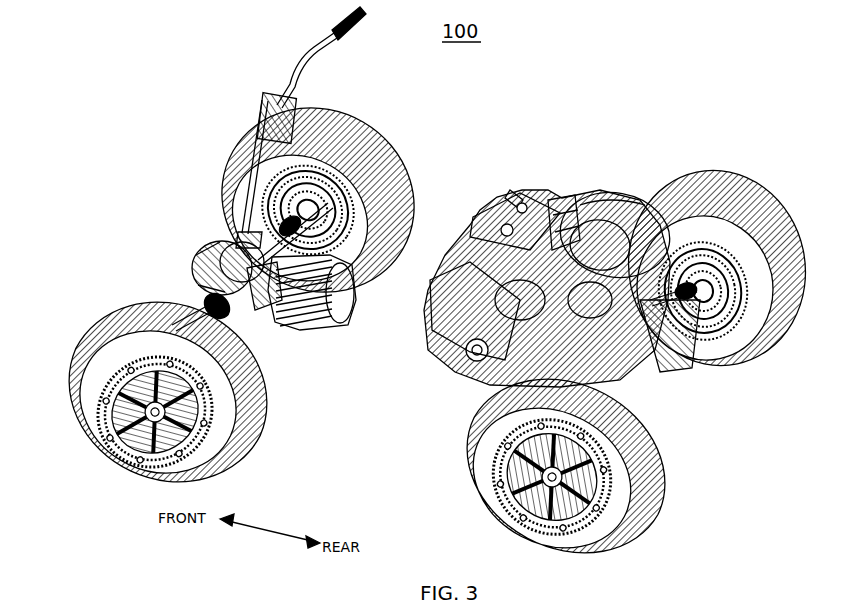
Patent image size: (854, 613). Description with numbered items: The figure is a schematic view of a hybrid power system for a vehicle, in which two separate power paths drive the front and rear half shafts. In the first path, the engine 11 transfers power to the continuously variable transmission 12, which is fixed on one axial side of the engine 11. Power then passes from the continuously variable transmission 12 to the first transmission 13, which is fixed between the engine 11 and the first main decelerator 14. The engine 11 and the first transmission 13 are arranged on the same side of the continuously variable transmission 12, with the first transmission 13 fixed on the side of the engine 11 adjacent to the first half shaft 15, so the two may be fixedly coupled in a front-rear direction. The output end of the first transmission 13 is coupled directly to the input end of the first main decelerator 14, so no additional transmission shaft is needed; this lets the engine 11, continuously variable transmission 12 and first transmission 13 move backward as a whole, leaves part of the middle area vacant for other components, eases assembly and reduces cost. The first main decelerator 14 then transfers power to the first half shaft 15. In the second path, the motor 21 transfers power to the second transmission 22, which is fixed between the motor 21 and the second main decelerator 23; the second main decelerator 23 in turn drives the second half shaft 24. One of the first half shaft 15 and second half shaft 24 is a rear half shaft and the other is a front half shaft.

The engine 11 is at (500, 205).
The continuously variable transmission 12 is at (592, 215).
The first transmission 13 is at (545, 205).
The first main decelerator 14 is at (670, 362).
The first half shaft 15 is at (770, 347).
The motor 21 is at (340, 300).
The second transmission 22 is at (262, 308).
The second main decelerator 23 is at (200, 254).
The second half shaft 24 is at (272, 221).